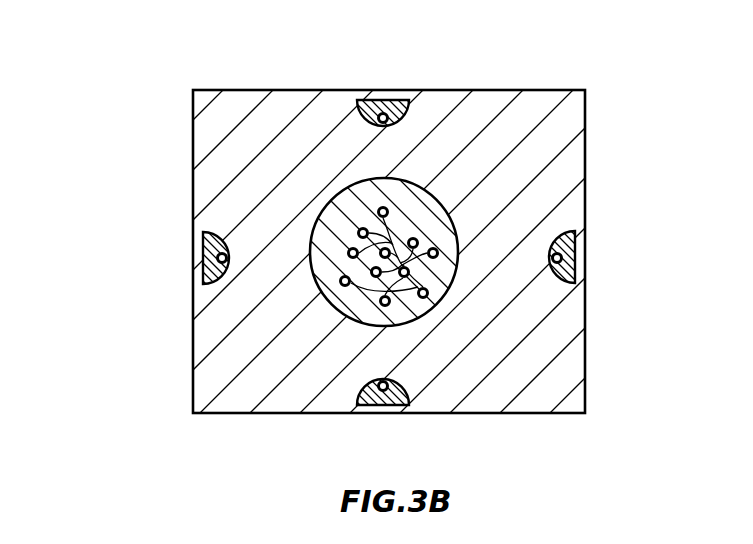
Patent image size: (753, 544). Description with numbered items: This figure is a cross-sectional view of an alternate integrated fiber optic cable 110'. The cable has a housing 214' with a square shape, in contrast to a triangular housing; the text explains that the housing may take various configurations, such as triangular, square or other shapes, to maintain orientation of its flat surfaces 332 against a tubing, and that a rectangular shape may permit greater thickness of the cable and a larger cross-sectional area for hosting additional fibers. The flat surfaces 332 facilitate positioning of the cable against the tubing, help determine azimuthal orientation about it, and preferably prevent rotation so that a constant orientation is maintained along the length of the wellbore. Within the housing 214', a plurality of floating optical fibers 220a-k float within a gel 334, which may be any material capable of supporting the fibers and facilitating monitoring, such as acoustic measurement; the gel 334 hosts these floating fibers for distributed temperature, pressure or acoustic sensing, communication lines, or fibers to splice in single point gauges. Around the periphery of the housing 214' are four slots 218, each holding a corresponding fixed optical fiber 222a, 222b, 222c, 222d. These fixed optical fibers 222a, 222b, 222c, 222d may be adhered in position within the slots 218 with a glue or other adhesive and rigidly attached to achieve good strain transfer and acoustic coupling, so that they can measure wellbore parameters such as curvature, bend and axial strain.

The alternate fiber optic cable 110' is at (82, 81).
The housing 214' is at (376, 251).
The slots 218 is at (378, 110).
The optical fibers 220a-k is at (430, 296).
The fixed optical fiber 222a is at (388, 108).
The fixed optical fiber 222b is at (573, 246).
The fixed optical fiber 222c is at (380, 405).
The fixed optical fiber 222d is at (204, 274).
The flat surfaces 332 is at (555, 90).
The gel 334 is at (423, 210).